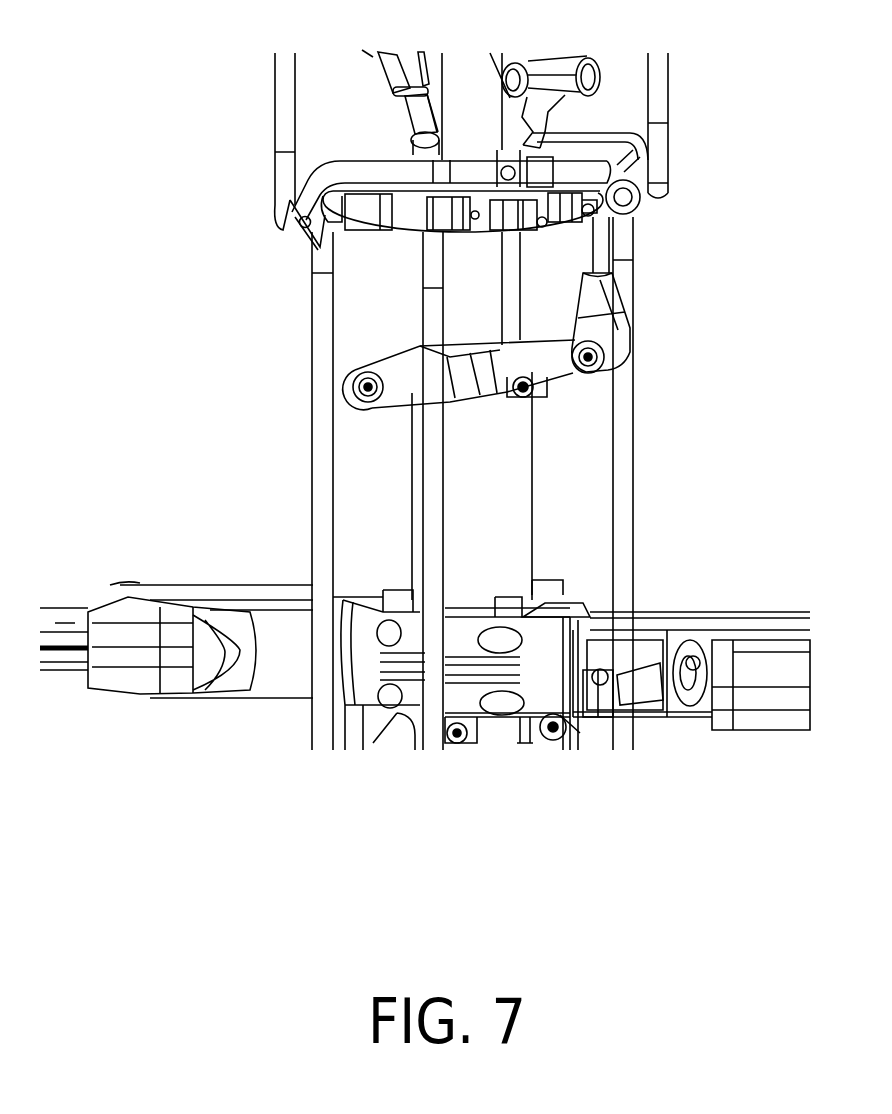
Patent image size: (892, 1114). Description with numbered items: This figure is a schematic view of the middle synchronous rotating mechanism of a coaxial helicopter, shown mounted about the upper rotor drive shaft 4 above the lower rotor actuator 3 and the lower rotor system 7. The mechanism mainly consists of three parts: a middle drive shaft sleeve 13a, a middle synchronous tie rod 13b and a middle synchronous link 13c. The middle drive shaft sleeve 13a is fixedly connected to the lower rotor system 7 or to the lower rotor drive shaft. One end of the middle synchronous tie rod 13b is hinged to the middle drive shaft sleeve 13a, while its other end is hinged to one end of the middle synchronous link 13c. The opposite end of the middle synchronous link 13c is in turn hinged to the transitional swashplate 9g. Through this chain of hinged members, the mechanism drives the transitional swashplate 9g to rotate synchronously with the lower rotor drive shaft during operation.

The upper rotor drive shaft 4 is at (480, 106).
The transitional swashplate 9g is at (413, 217).
The middle synchronous tie rod 13b is at (527, 363).
The middle drive shaft sleeve 13a is at (497, 390).
The middle synchronous link 13c is at (610, 295).
The lower rotor actuator 3 is at (485, 549).
The lower rotor system 7 is at (222, 612).